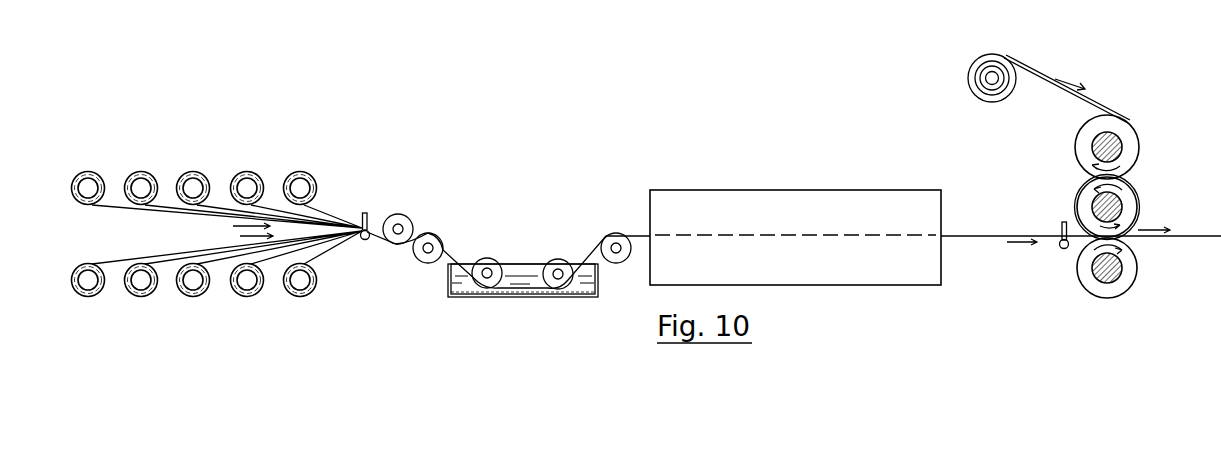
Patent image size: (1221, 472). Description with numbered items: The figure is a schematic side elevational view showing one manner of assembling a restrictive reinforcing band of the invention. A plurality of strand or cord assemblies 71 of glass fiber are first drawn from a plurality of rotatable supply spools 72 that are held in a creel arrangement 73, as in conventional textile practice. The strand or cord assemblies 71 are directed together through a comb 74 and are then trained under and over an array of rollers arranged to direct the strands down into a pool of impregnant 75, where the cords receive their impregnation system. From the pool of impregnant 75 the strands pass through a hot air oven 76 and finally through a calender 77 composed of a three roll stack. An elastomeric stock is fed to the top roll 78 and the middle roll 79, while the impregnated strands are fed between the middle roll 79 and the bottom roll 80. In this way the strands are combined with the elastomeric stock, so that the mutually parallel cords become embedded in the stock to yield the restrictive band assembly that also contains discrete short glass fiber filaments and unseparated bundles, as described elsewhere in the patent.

The strand or cord assemblies 71 is at (323, 210).
The rotatable supply spools 72 is at (258, 174).
The creel arrangement 73 is at (221, 215).
The comb 74 is at (367, 213).
The pool of impregnant 75 is at (591, 284).
The hot air oven 76 is at (737, 200).
The calender 77 is at (1074, 191).
The top roll 78 is at (1125, 126).
The middle roll 79 is at (1137, 194).
The bottom roll 80 is at (1138, 270).